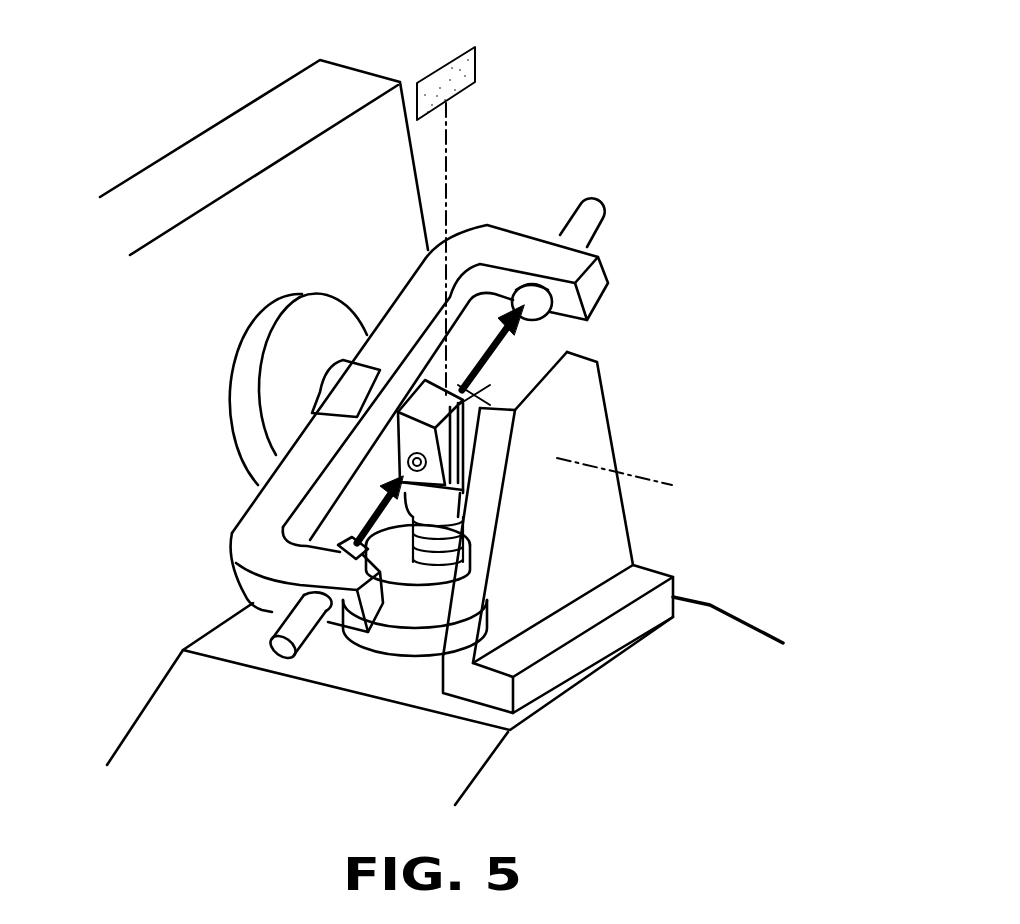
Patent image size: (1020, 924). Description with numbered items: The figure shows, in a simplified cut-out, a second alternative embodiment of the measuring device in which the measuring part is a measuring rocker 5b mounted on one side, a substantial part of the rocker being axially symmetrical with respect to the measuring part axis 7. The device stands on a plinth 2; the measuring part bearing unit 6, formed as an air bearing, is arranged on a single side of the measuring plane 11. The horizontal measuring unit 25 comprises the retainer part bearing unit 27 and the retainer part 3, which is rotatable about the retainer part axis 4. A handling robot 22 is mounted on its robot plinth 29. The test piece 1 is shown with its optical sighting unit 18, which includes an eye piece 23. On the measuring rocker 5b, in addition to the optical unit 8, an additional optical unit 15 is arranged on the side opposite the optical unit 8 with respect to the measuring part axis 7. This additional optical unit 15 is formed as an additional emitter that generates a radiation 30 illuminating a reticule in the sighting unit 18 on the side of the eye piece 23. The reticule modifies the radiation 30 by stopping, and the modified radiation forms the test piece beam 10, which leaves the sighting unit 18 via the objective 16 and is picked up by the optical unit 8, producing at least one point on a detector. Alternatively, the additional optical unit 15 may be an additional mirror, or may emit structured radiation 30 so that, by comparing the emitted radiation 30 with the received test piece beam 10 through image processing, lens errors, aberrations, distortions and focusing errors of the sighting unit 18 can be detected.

The test piece 1 is at (515, 365).
The plinth 2 is at (250, 617).
The retainer part 3 is at (467, 550).
The retainer part axis 4 is at (448, 162).
The measuring rocker 5b is at (483, 245).
The measuring part bearing unit 6 is at (253, 401).
The measuring part axis 7 is at (642, 478).
The optical unit 8 is at (580, 228).
The test piece beam 10 is at (487, 345).
The measuring plane 11 is at (463, 72).
The additional optical unit 15 is at (295, 626).
The objective 16 is at (473, 390).
The optical sighting unit 18 is at (500, 395).
The handling robot 22 is at (627, 412).
The eye piece 23 is at (423, 460).
The horizontal measuring unit 25 is at (417, 632).
The retainer part bearing unit 27 is at (410, 568).
The robot plinth 29 is at (572, 527).
The radiation 30 is at (368, 510).